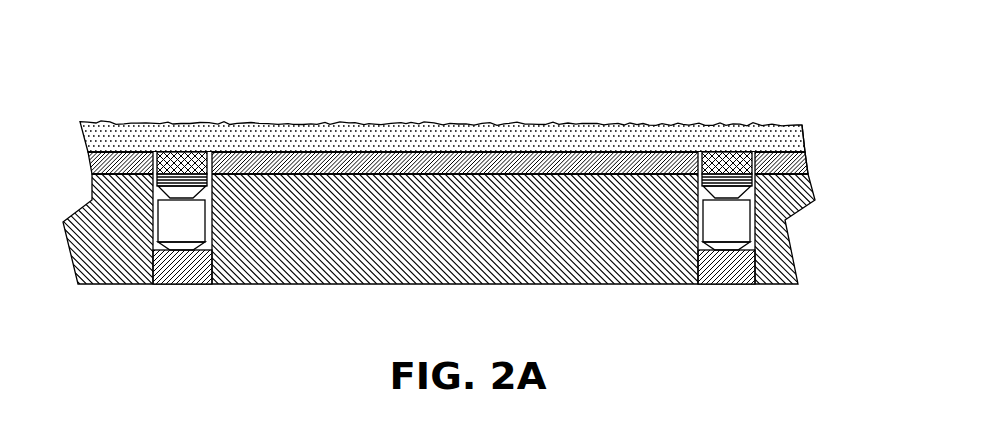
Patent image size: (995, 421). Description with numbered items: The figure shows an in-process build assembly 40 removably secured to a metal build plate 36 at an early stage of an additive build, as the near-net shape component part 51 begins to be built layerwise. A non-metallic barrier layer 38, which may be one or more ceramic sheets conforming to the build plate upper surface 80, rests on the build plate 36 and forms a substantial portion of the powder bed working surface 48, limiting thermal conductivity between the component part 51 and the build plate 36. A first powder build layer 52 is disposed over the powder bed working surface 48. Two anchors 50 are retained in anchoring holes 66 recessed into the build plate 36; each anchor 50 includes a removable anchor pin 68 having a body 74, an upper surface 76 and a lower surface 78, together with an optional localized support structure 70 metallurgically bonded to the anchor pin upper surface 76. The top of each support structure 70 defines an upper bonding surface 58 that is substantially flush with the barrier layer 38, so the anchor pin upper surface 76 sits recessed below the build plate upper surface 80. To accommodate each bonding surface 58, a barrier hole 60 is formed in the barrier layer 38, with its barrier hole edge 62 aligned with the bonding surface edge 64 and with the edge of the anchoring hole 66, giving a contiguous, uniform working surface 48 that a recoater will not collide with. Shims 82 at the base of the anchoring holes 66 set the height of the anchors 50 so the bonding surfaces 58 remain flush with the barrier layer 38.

The build plate 36 is at (396, 287).
The non-metallic barrier layer 38 is at (98, 165).
The build assembly 40 is at (812, 128).
The powder bed working surface 48 is at (229, 151).
The anchor 50 is at (156, 219).
The in-process near-net shape component part 51 is at (809, 114).
The first powder build layer 52 is at (661, 131).
The upper bonding surface 58 is at (173, 149).
The barrier hole 60 is at (210, 152).
The barrier hole edge 62 is at (692, 165).
The bonding surface edge 64 is at (754, 157).
The anchoring hole 66 is at (163, 252).
The anchor pin 68 is at (207, 225).
The localized support structure 70 is at (200, 165).
The anchor pin body 74 is at (738, 245).
The anchor pin upper surface 76 is at (737, 230).
The anchor pin lower surface 78 is at (720, 246).
The build plate upper surface 80 is at (408, 165).
The shim 82 is at (180, 263).